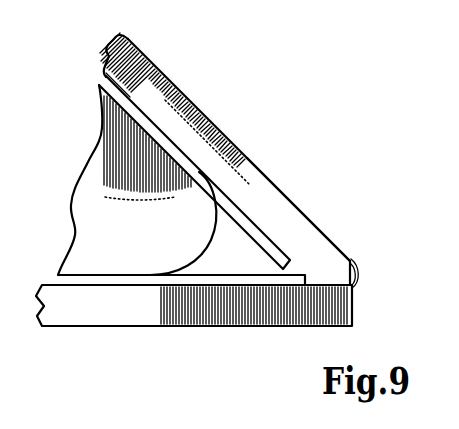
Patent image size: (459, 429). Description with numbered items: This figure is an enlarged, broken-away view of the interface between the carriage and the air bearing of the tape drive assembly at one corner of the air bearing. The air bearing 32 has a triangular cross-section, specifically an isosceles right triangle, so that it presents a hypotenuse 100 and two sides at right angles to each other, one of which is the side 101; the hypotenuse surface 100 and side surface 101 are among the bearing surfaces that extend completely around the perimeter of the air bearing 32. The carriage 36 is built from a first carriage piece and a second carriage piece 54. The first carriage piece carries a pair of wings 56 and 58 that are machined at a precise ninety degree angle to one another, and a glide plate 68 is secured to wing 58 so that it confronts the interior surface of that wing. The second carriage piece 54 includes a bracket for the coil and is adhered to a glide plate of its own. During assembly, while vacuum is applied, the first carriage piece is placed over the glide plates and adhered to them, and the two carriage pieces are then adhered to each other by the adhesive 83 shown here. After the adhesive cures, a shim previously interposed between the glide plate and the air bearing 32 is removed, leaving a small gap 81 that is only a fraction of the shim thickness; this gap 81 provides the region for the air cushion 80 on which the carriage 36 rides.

The air bearing 32 is at (135, 223).
The carriage 36 is at (316, 226).
The second carriage piece 54 is at (223, 326).
The wing 56 is at (147, 54).
The wing 58 is at (261, 192).
The glide plate 68 is at (168, 79).
The air cushion 80 is at (109, 298).
The gap 81 is at (224, 138).
The adhesive 83 is at (358, 276).
The hypotenuse 100 is at (199, 155).
The side 101 is at (124, 279).